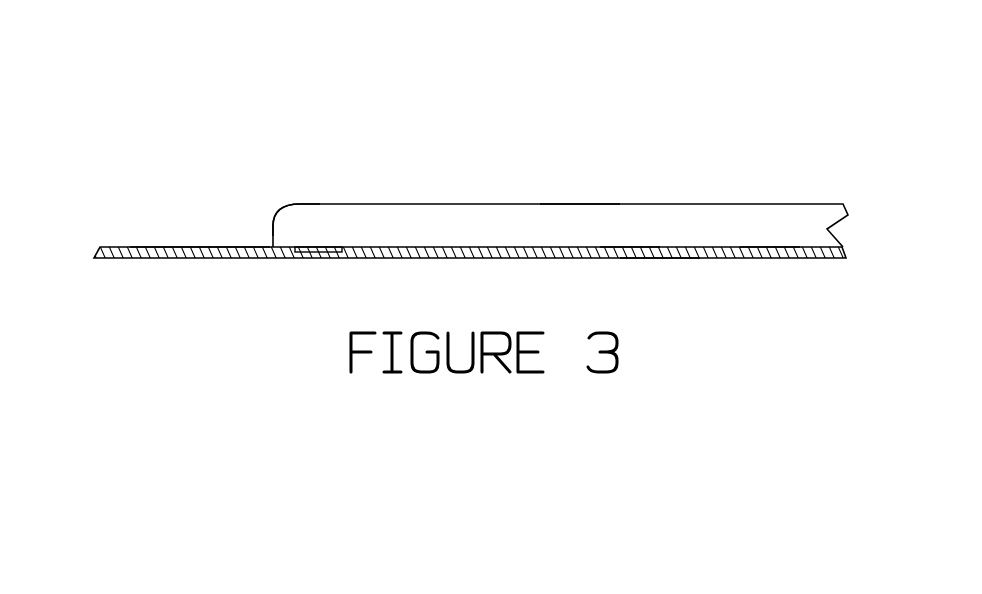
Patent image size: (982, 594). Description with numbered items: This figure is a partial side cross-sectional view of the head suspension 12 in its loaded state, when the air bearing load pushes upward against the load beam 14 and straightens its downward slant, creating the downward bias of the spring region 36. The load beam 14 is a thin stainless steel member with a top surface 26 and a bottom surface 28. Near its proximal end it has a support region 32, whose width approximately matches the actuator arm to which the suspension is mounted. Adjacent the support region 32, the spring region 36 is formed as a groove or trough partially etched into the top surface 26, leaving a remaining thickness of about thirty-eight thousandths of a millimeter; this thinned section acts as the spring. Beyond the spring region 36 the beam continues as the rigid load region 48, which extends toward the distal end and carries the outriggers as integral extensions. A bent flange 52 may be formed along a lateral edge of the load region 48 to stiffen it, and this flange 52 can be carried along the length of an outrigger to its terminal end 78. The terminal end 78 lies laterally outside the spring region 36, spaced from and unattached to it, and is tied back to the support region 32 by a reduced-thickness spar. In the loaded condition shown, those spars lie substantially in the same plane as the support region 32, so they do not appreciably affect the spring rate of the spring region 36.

The head suspension 12 is at (520, 152).
The load beam 14 is at (122, 246).
The top surface 26 is at (625, 248).
The bottom surface 28 is at (660, 260).
The support region 32 is at (187, 247).
The spring region 36 is at (317, 247).
The rigid load region 48 is at (767, 248).
The bent flange 52 is at (578, 225).
The terminal end 78 is at (275, 212).